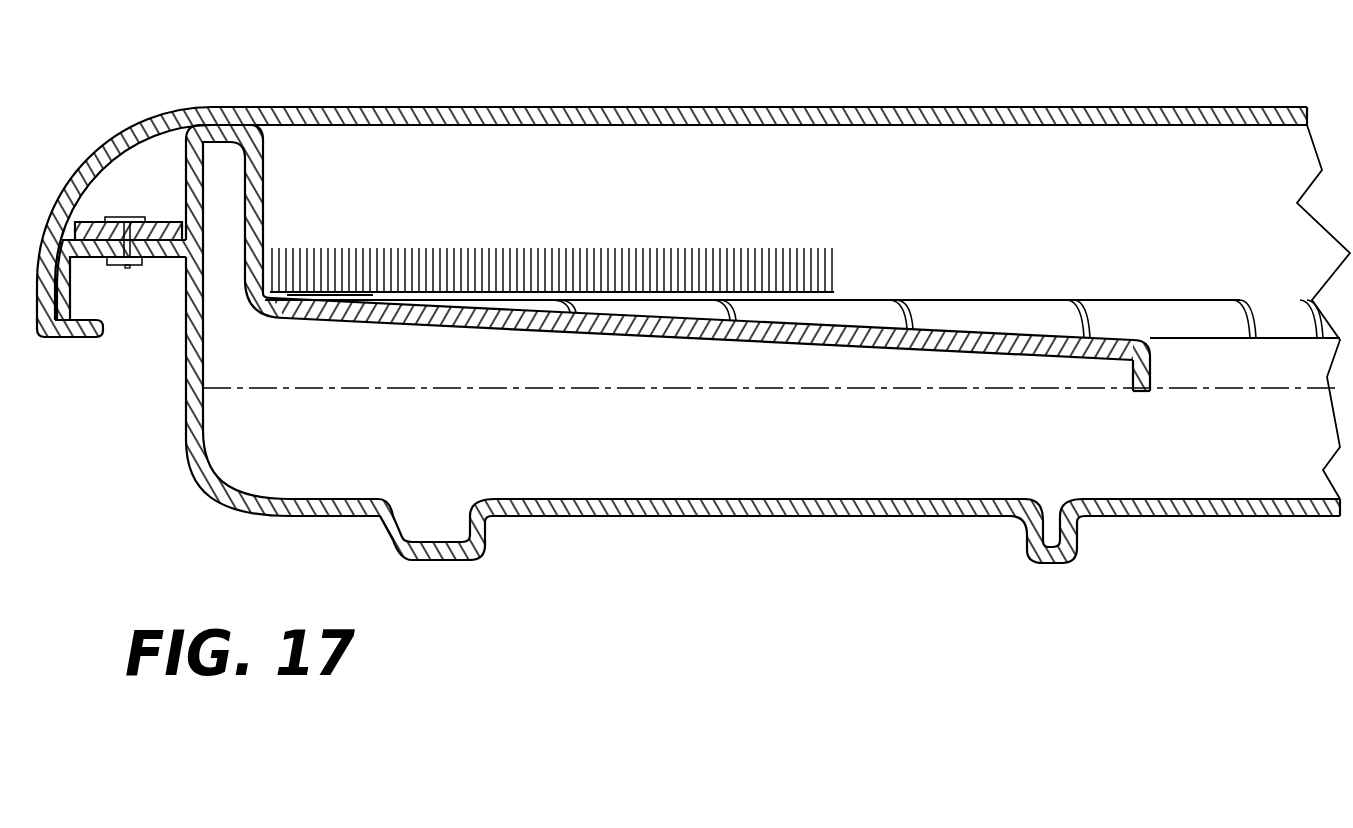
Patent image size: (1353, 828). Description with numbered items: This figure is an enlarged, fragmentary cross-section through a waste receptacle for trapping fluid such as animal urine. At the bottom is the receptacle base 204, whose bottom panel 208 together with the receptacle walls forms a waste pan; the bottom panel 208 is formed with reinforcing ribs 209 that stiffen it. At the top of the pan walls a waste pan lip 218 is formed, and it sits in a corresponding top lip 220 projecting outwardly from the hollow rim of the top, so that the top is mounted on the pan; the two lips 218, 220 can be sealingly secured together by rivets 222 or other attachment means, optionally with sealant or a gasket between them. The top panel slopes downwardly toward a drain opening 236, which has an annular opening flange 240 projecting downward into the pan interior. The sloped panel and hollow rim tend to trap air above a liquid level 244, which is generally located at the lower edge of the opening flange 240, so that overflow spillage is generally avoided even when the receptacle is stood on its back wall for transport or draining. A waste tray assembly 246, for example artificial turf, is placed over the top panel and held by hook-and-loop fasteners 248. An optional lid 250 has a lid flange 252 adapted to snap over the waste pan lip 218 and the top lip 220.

The receptacle base 204 is at (203, 487).
The bottom panel 208 is at (690, 519).
The reinforcing ribs 209 is at (1027, 549).
The waste pan lip 218 is at (162, 258).
The top lip 220 is at (67, 200).
The rivets 222 is at (103, 222).
The drain opening 236 is at (1152, 372).
The annular opening flange 240 is at (1138, 393).
The liquid level 244 is at (468, 385).
The waste tray assembly 246 is at (833, 248).
The hook-and-loop fasteners 248 is at (333, 320).
The lid 250 is at (453, 107).
The lid flange 252 is at (45, 336).